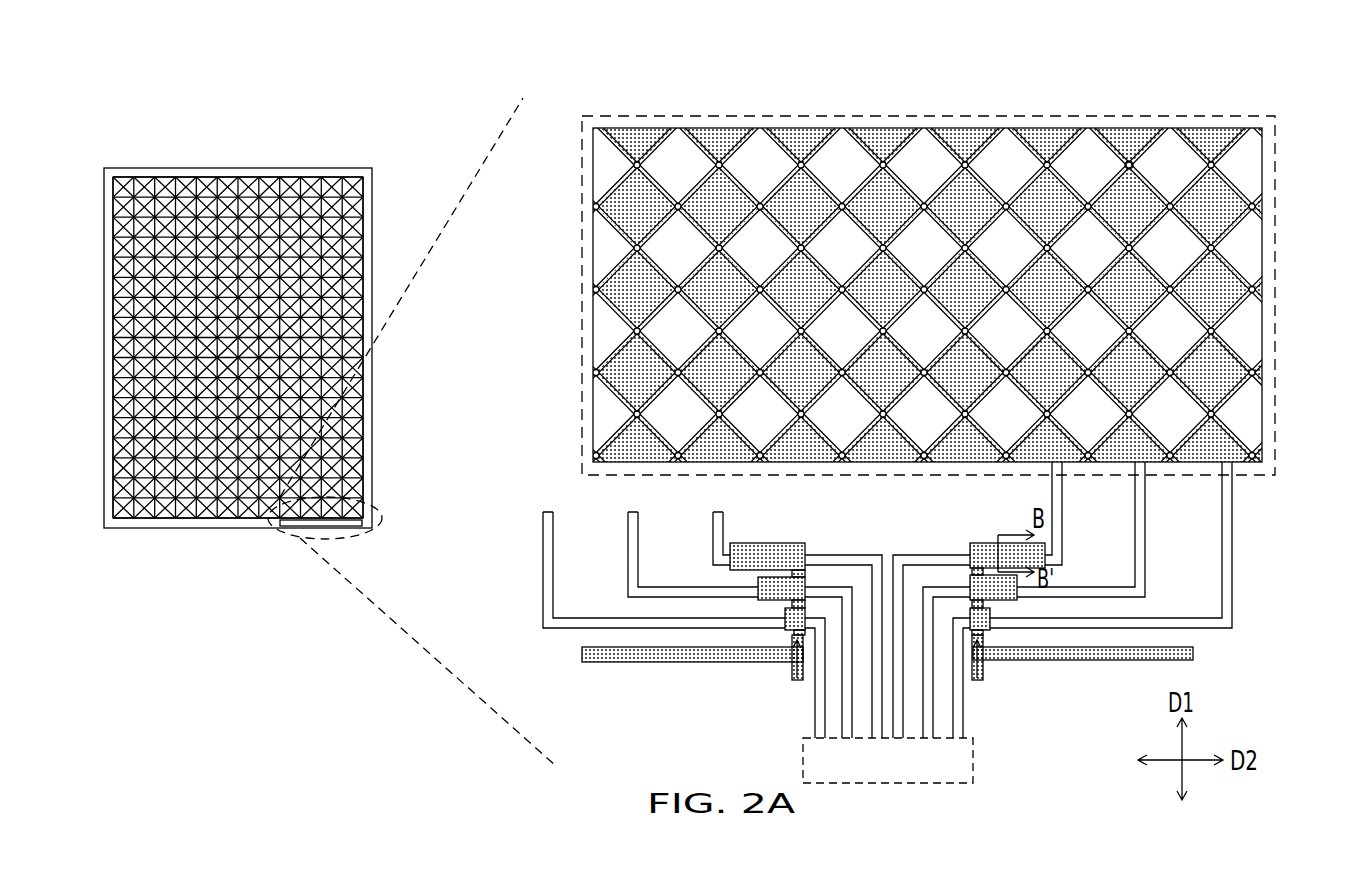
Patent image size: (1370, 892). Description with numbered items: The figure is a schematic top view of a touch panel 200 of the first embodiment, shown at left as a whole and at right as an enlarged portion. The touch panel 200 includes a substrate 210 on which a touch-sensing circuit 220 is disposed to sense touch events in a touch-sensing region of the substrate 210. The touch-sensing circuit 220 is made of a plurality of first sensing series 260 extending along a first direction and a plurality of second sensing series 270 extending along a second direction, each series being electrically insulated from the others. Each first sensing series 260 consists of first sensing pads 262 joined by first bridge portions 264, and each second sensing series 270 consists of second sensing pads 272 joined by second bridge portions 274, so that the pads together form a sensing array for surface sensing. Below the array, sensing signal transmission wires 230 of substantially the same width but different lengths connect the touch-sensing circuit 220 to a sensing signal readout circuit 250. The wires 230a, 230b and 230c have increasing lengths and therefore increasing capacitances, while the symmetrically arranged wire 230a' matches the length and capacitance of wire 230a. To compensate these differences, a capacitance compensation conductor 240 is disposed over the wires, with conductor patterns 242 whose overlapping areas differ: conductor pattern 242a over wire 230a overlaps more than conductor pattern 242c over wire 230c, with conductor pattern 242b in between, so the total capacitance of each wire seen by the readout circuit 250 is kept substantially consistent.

The touch panel 200 is at (663, 429).
The substrate 210 is at (327, 166).
The touch-sensing circuit 220 is at (343, 190).
The sensing signal transmission wires 230 is at (887, 600).
The sensing signal transmission wire 230a' is at (715, 560).
The sensing signal transmission wire 230a is at (983, 513).
The sensing signal transmission wire 230b is at (1135, 566).
The sensing signal transmission wire 230c is at (1222, 567).
The capacitance compensation conductor 240 is at (797, 680).
The conductor pattern 242 is at (752, 543).
The conductor pattern 242a is at (970, 547).
The conductor pattern 242b is at (990, 628).
The conductor pattern 242c is at (1005, 602).
The sensing signal readout circuit 250 is at (975, 760).
The first sensing series 260 is at (641, 142).
The first sensing pads 262 is at (1211, 130).
The first bridge portions 264 is at (1135, 163).
The second sensing series 270 is at (604, 170).
The second sensing pads 272 is at (678, 148).
The second bridge portions 274 is at (635, 163).